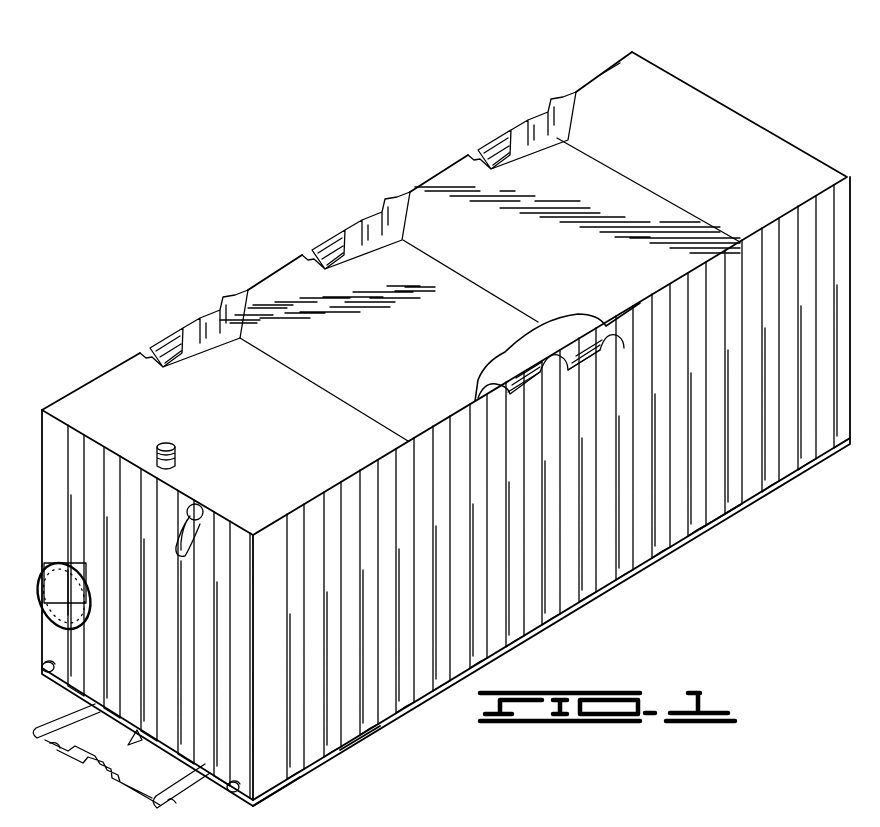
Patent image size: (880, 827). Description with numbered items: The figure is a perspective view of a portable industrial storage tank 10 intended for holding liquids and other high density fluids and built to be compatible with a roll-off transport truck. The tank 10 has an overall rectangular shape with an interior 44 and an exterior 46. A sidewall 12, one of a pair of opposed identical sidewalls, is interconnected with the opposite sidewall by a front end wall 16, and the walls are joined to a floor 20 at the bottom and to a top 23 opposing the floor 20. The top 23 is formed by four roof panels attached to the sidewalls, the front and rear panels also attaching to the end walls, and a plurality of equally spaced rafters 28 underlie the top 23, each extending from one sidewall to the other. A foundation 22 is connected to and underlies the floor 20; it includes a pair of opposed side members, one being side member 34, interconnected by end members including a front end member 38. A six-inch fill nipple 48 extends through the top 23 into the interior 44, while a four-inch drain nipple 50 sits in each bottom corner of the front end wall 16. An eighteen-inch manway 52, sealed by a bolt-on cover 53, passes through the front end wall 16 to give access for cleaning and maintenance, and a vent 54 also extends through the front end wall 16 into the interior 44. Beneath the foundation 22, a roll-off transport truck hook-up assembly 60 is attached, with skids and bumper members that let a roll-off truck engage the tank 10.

The industrial storage tank 10 is at (263, 193).
The sidewall 12 is at (675, 512).
The front end wall 16 is at (82, 450).
The floor 20 is at (300, 775).
The foundation 22 is at (375, 735).
The top 23 is at (720, 105).
The rafter 28 is at (150, 345).
The side member 34 is at (630, 570).
The front end member 38 is at (70, 698).
The interior 44 is at (395, 235).
The exterior 46 is at (735, 500).
The fill nipple 48 is at (175, 450).
The drain nipple 50 is at (48, 665).
The manway 52 is at (80, 560).
The bolt-on cover 53 is at (55, 565).
The vent 54 is at (200, 512).
The roll-off transport truck hook-up assembly 60 is at (140, 800).